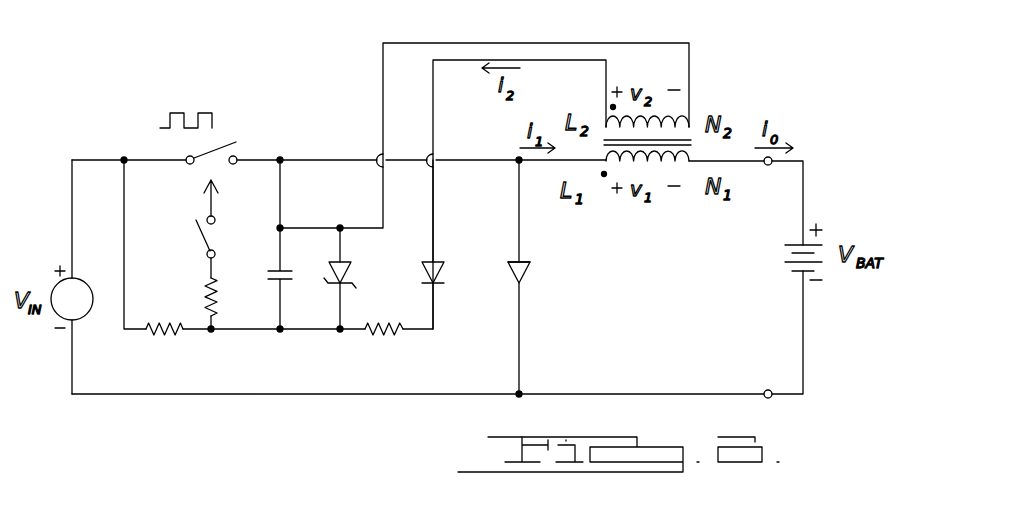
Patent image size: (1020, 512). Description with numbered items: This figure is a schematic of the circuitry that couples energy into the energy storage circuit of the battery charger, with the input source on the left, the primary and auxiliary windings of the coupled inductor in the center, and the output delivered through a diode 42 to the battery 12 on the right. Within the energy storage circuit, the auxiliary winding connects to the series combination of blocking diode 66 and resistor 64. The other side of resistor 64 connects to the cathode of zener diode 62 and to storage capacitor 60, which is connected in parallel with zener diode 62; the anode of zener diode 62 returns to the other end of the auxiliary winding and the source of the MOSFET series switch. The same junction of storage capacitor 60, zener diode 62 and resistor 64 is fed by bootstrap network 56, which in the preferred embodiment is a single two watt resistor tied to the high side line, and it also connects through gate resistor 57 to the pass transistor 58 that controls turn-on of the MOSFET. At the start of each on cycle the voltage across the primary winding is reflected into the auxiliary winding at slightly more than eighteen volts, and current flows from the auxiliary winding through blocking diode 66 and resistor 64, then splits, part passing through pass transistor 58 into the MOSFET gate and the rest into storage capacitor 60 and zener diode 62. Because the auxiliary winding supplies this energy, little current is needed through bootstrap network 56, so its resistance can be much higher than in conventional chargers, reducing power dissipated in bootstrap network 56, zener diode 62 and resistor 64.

The battery 12 is at (787, 251).
The diode 42 is at (527, 272).
The bootstrap network 56 is at (164, 333).
The gate resistor 57 is at (210, 296).
The pass transistor 58 is at (198, 234).
The storage capacitor 60 is at (268, 274).
The zener diode 62 is at (348, 270).
The resistor 64 is at (386, 332).
The blocking diode 66 is at (452, 270).